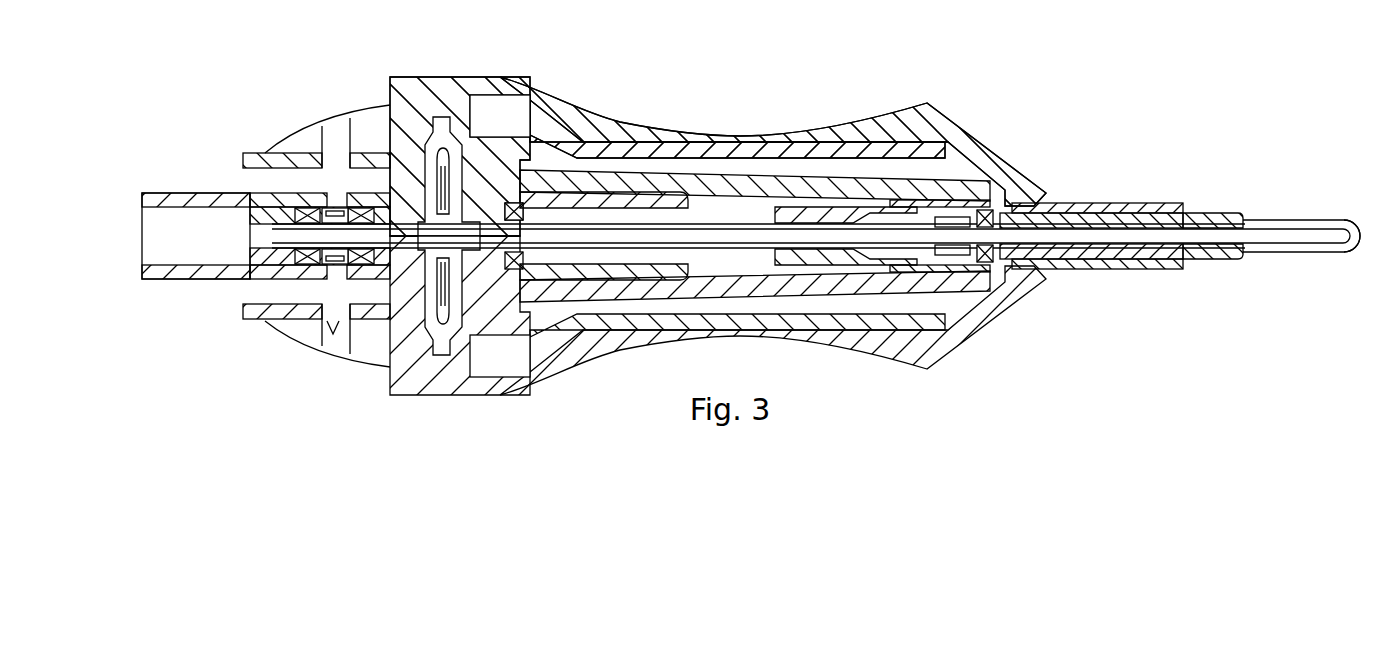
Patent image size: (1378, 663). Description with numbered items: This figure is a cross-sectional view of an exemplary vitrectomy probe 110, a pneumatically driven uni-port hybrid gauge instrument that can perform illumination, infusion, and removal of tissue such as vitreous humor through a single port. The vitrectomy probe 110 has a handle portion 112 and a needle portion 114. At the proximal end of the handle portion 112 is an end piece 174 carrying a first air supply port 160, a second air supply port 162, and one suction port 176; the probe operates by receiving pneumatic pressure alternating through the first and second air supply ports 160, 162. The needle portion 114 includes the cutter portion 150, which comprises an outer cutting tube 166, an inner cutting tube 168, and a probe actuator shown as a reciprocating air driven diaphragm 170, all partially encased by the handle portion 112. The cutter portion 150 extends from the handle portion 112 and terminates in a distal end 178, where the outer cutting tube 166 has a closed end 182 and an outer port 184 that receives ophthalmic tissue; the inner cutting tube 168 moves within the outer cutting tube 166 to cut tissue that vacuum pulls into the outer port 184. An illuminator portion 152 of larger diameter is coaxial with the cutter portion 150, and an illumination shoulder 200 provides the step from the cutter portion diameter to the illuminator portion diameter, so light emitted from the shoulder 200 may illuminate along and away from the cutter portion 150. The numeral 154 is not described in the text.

The vitrectomy probe 110 is at (1040, 72).
The handle portion 112 is at (637, 116).
The needle portion 114 is at (1108, 180).
The cutter portion 150 is at (1293, 256).
The illuminator portion 152 is at (1195, 268).
The inner sheath 154 is at (1085, 272).
The first air supply port 160 is at (247, 178).
The second air supply port 162 is at (247, 290).
The outer cutting tube 166 is at (1147, 206).
The inner cutting tube 168 is at (1250, 260).
The reciprocating air driven diaphragm 170 is at (462, 255).
The end piece 174 is at (303, 112).
The suction port 176 is at (156, 250).
The distal end 178 is at (1344, 192).
The closed end 182 is at (1360, 248).
The outer port 184 is at (1326, 226).
The illumination shoulder 200 is at (1243, 211).